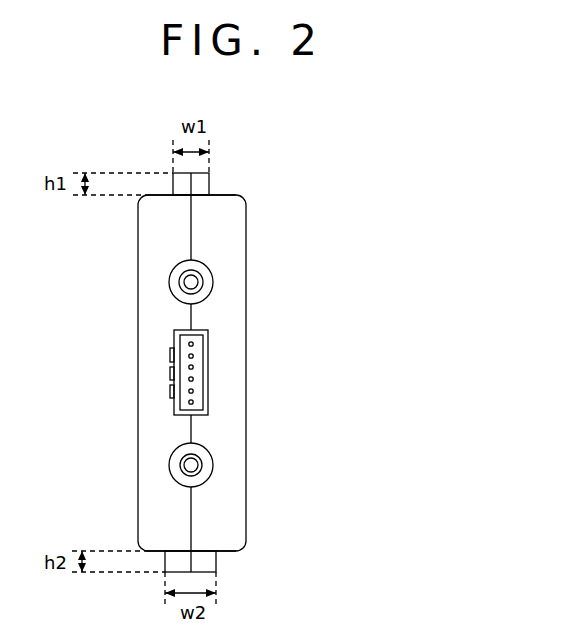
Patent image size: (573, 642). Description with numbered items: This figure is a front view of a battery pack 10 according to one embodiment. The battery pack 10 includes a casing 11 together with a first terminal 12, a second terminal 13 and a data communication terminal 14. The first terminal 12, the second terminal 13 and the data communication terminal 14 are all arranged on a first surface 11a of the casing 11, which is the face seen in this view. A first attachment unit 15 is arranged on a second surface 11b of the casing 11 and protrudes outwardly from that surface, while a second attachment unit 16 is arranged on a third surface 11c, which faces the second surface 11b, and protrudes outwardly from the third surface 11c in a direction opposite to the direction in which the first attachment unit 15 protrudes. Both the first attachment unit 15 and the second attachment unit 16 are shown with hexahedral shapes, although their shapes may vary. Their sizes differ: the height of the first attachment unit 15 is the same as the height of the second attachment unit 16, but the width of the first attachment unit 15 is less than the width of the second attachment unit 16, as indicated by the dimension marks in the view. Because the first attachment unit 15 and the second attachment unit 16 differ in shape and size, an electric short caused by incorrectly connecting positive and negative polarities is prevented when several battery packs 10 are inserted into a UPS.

The battery pack 10 is at (418, 130).
The casing 11 is at (122, 277).
The first surface 11a is at (233, 235).
The second surface 11b is at (225, 195).
The third surface 11c is at (220, 552).
The first terminal 12 is at (213, 282).
The second terminal 13 is at (213, 465).
The data communication terminal 14 is at (208, 373).
The first attachment unit 15 is at (205, 182).
The second attachment unit 16 is at (203, 561).